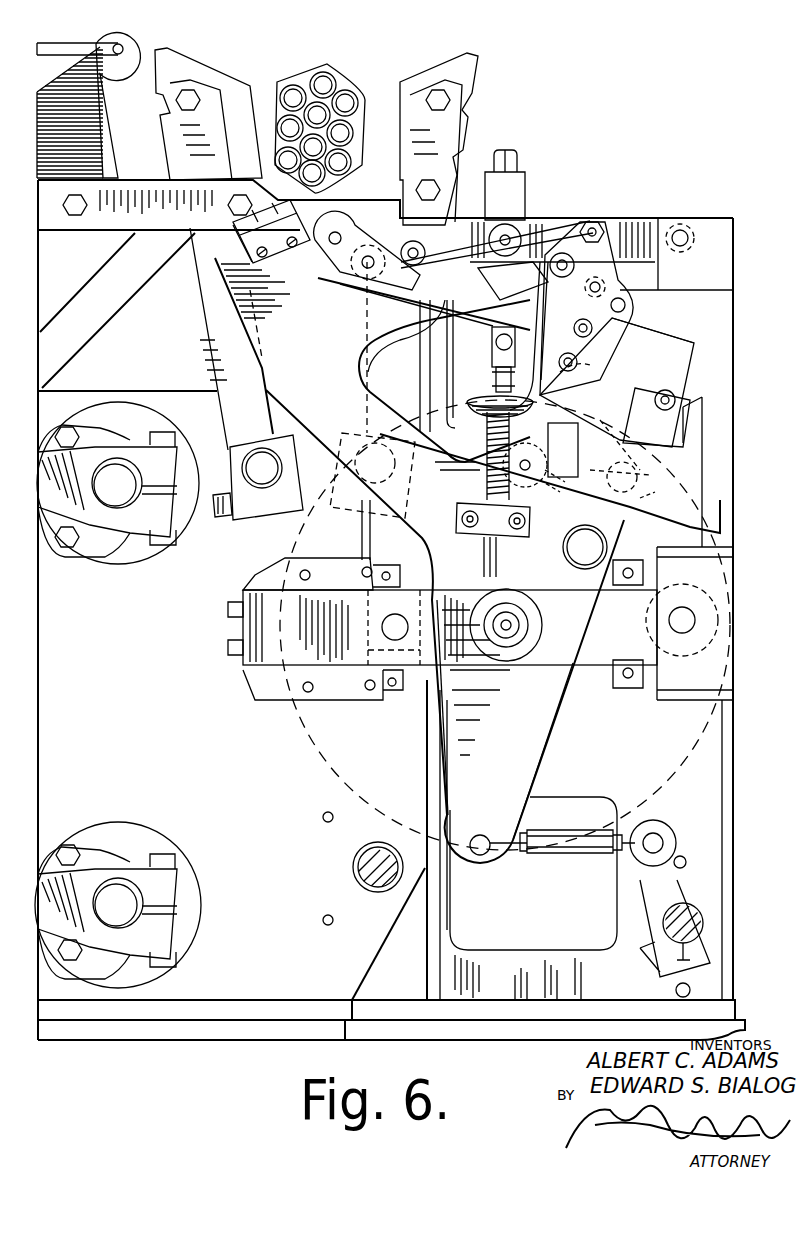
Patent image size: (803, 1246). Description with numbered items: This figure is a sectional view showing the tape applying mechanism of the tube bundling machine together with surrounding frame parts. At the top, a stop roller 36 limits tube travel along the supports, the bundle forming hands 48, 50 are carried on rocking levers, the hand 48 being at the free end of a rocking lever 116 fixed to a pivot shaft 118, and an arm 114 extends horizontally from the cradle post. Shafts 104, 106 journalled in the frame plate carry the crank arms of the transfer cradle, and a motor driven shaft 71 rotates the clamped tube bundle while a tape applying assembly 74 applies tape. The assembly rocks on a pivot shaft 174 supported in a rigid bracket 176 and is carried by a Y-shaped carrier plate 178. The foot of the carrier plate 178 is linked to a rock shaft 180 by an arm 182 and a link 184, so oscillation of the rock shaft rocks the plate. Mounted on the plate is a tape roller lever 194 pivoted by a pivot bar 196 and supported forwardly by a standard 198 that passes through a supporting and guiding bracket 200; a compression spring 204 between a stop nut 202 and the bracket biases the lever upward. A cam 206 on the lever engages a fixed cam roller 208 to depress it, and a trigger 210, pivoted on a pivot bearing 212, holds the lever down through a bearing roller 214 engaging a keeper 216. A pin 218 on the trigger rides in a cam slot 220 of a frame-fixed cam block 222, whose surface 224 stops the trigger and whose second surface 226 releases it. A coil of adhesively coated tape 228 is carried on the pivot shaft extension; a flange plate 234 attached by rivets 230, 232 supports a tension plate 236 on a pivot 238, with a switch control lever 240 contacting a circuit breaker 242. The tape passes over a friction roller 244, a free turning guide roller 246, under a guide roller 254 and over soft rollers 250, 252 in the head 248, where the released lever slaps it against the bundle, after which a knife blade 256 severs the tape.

The stop roller 36 is at (130, 30).
The bundle forming hand 48 is at (218, 70).
The bundle forming hand 50 is at (440, 62).
The motor driven shaft 71 is at (355, 854).
The tape applying assembly 74 is at (575, 710).
The shaft 104 is at (132, 488).
The shaft 106 is at (133, 907).
The arm 114 is at (135, 192).
The rocking lever 116 is at (209, 318).
The pivot shaft 118 is at (262, 452).
The pivot shaft 174 is at (510, 622).
The rigid bracket 176 is at (293, 653).
The carrier plate 178 is at (535, 750).
The rock shaft 180 is at (700, 922).
The arm 182 is at (678, 885).
The link 184 is at (537, 845).
The tape roller lever 194 is at (432, 353).
The pivot bar 196 is at (592, 330).
The standard 198 is at (492, 342).
The supporting and guiding bracket 200 is at (472, 532).
The stop nut 202 is at (496, 378).
The compression spring 204 is at (486, 485).
The cam 206 is at (513, 285).
The cam roller 208 is at (508, 232).
The trigger 210 is at (660, 423).
The pivot bearing 212 is at (577, 546).
The bearing roller 214 is at (675, 398).
The keeper 216 is at (665, 380).
The pin 218 is at (640, 468).
The cam slot 220 is at (634, 512).
The cam block 222 is at (693, 443).
The surface 224 is at (640, 490).
The second surface 226 is at (563, 450).
The coil of adhesively coated tape 228 is at (466, 400).
The rivet 230 is at (628, 306).
The rivet 232 is at (577, 362).
The flange plate 234 is at (587, 375).
The tension plate 236 is at (600, 255).
The pivot 238 is at (602, 290).
The switch control lever 240 is at (540, 372).
The circuit breaker 242 is at (534, 477).
The friction roller 244 is at (572, 258).
The free turning guide roller 246 is at (597, 222).
The head 248 is at (416, 305).
The soft roller 250 is at (322, 250).
The soft roller 252 is at (322, 310).
The guide roller 254 is at (430, 262).
The knife blade 256 is at (353, 168).